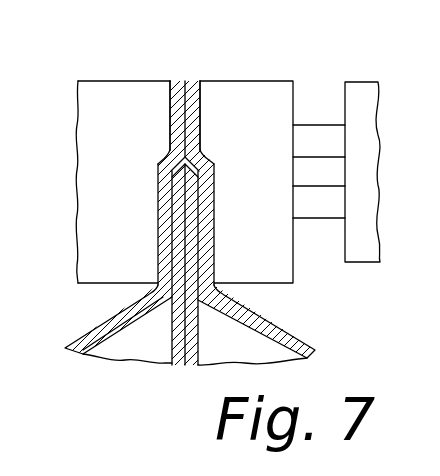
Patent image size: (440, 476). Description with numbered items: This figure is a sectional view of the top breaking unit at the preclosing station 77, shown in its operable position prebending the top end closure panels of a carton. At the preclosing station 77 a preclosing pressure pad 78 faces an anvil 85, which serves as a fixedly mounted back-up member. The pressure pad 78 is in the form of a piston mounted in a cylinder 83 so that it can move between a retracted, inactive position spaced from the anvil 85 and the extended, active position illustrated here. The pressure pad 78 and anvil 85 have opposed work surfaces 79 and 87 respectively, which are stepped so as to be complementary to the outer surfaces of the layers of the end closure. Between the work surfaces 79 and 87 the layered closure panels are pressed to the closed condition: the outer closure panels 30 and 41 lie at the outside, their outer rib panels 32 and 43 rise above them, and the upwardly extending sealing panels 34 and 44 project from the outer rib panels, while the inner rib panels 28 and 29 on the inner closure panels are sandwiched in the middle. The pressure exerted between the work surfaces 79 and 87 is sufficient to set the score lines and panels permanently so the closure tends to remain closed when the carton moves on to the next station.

The preclosing station 77 is at (190, 62).
The sealing panel 34 is at (177, 80).
The sealing panel 44 is at (194, 80).
The preclosing pressure pad 78 is at (272, 81).
The cylinder 83 is at (352, 86).
The work surface 87 is at (162, 164).
The work surface 79 is at (204, 152).
The inner rib panel 28 is at (181, 192).
The inner rib panel 29 is at (201, 177).
The outer rib panel 43 is at (170, 225).
The outer rib panel 32 is at (213, 217).
The anvil 85 is at (95, 253).
The outer closure panel 41 is at (122, 323).
The outer closure panel 30 is at (268, 320).